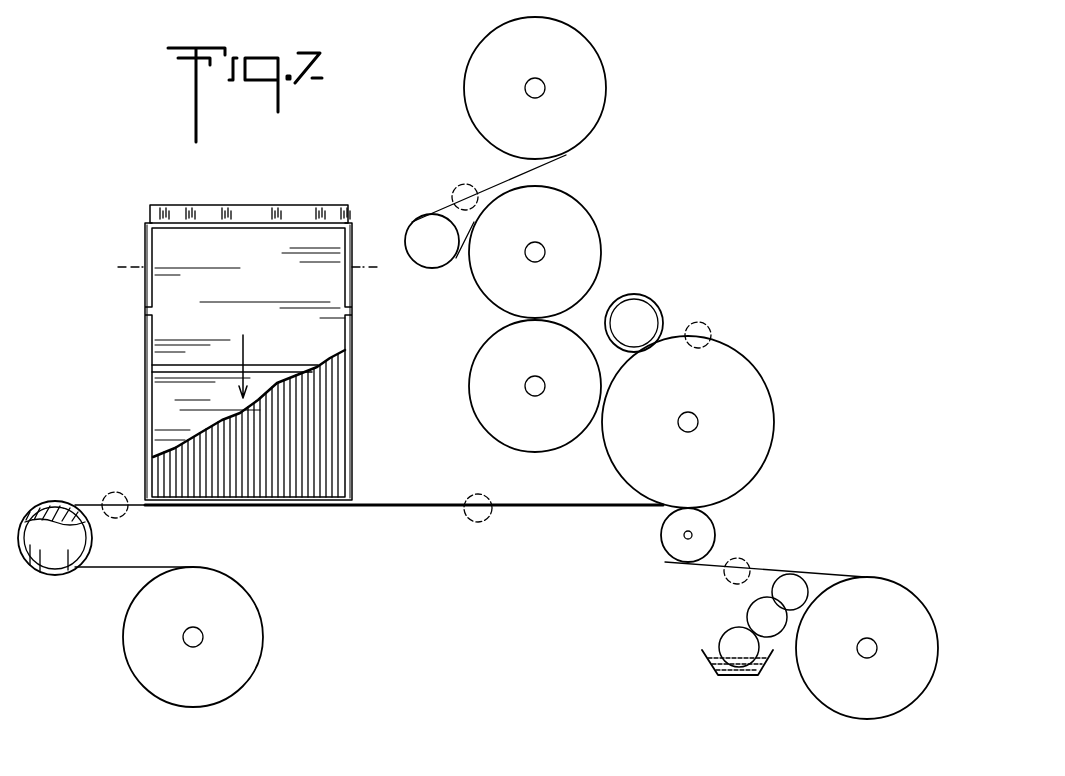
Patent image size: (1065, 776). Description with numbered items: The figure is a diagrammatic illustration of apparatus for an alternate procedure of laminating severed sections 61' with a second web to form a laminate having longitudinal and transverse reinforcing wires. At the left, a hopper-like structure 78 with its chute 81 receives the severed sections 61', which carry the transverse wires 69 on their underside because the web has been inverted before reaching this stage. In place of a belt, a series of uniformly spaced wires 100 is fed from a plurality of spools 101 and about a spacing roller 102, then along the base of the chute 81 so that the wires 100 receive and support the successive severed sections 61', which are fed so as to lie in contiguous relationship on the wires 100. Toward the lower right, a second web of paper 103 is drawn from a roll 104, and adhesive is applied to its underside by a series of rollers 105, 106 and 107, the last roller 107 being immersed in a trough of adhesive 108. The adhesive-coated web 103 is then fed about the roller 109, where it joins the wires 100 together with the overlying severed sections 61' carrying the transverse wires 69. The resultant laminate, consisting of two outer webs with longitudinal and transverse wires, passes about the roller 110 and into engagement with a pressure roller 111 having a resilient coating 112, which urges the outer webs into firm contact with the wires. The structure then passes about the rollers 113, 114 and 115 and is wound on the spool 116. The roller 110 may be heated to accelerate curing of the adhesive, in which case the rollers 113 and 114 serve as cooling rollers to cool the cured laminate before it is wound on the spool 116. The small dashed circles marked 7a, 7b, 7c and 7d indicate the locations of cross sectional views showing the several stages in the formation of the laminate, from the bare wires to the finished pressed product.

The container 78 is at (145, 237).
The chute 81 is at (243, 207).
The severed sections 61' is at (217, 344).
The wires 69 is at (325, 455).
The wires 100 is at (385, 511).
The spools 101 is at (240, 637).
The spacing roller 102 is at (50, 500).
The second web of paper 103 is at (833, 572).
The roll 104 is at (821, 680).
The roller 105 is at (775, 580).
The roller 106 is at (775, 623).
The roller 107 is at (725, 635).
The trough of adhesive 108 is at (700, 655).
The roller 109 is at (705, 532).
The roller 110 is at (752, 383).
The pressure roller 111 is at (653, 318).
The resilient coating 112 is at (633, 297).
The roller 113 is at (475, 378).
The roller 114 is at (590, 215).
The roller 115 is at (425, 258).
The spool 116 is at (595, 85).
The cross sectional view 7a is at (123, 483).
The cross sectional view 7b is at (469, 531).
The cross sectional view 7c is at (755, 544).
The cross sectional view 7d is at (728, 288).